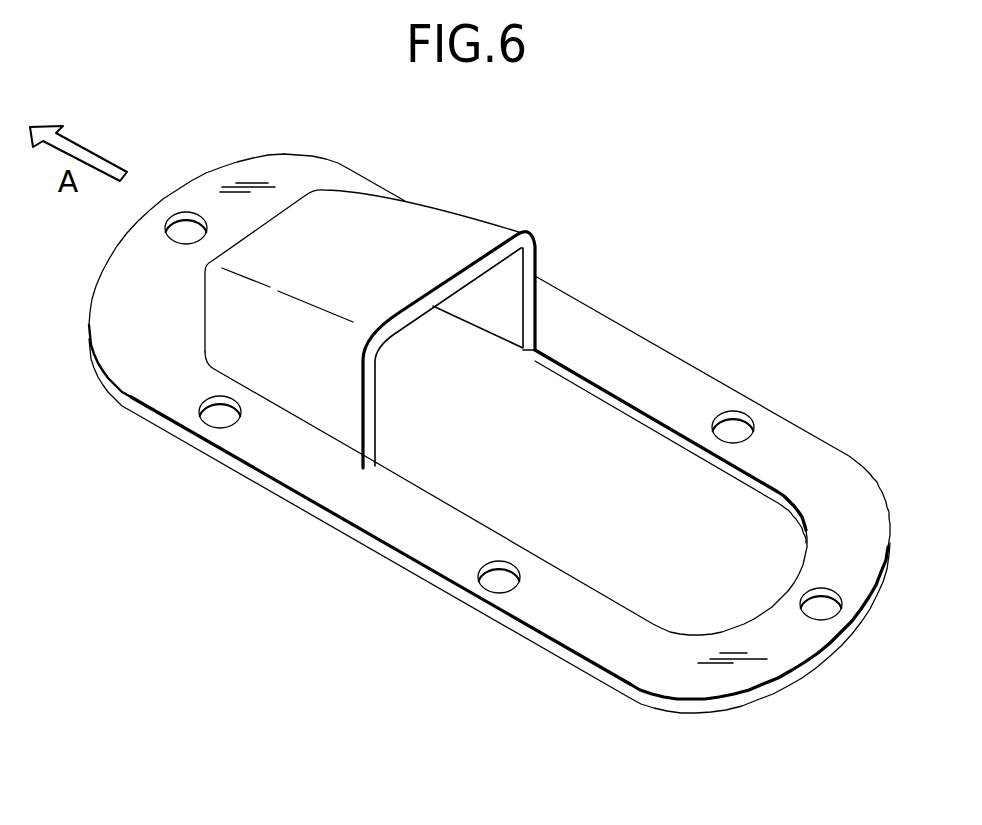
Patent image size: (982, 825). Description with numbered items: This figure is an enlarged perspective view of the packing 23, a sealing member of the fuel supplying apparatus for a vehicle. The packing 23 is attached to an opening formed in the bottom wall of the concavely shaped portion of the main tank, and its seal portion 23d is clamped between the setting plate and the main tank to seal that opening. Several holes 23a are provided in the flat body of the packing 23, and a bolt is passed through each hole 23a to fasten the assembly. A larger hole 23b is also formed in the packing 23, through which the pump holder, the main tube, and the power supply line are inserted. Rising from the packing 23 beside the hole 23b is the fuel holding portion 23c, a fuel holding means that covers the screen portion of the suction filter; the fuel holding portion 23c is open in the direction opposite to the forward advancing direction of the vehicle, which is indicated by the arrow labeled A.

The packing 23 is at (641, 338).
The hole 23a is at (731, 411).
The hole 23b is at (571, 577).
The fuel holding portion 23c is at (440, 228).
The seal portion 23d is at (324, 508).